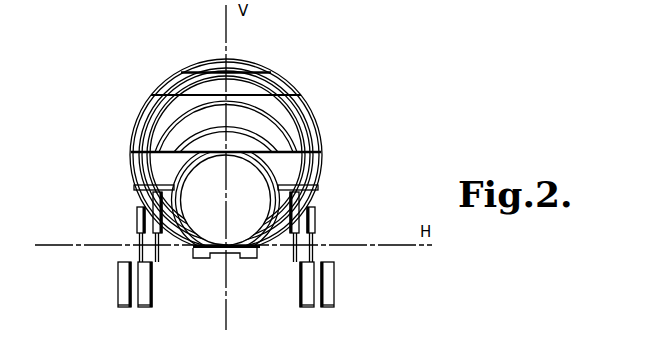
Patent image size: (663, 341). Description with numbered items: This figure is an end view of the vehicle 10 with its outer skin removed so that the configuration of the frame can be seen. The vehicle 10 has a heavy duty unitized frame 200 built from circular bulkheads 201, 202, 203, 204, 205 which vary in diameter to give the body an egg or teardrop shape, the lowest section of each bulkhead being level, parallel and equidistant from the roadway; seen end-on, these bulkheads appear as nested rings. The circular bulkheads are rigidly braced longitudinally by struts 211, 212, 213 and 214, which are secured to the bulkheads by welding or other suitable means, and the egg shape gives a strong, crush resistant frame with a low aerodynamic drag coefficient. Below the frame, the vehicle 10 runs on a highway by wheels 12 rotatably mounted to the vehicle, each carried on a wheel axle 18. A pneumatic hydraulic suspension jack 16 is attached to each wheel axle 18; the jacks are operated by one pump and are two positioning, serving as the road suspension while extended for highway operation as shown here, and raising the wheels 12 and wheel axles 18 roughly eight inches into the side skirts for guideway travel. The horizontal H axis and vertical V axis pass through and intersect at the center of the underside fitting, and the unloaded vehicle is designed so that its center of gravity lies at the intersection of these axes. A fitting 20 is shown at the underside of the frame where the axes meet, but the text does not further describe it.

The vehicle 10 is at (404, 88).
The wheels 12 is at (125, 308).
The pneumatic hydraulic suspension jack 16 is at (138, 218).
The wheel axle 18 is at (137, 284).
The base 20 is at (206, 254).
The unitized frame 200 is at (293, 86).
The circular bulkhead 201 is at (138, 207).
The circular bulkhead 202 is at (165, 171).
The circular bulkhead 203 is at (165, 121).
The circular bulkhead 204 is at (185, 86).
The circular bulkhead 205 is at (222, 58).
The strut 211 is at (320, 174).
The strut 212 is at (321, 151).
The strut 213 is at (302, 97).
The strut 214 is at (267, 71).